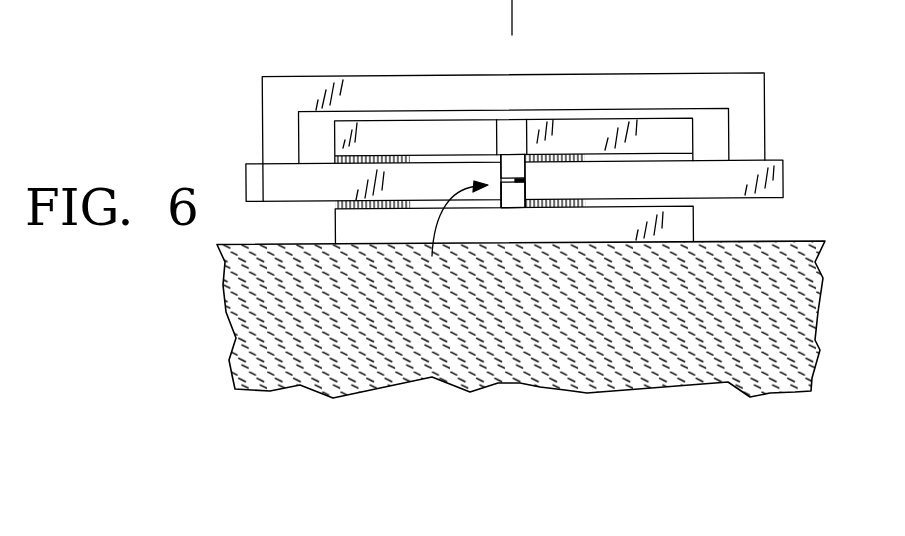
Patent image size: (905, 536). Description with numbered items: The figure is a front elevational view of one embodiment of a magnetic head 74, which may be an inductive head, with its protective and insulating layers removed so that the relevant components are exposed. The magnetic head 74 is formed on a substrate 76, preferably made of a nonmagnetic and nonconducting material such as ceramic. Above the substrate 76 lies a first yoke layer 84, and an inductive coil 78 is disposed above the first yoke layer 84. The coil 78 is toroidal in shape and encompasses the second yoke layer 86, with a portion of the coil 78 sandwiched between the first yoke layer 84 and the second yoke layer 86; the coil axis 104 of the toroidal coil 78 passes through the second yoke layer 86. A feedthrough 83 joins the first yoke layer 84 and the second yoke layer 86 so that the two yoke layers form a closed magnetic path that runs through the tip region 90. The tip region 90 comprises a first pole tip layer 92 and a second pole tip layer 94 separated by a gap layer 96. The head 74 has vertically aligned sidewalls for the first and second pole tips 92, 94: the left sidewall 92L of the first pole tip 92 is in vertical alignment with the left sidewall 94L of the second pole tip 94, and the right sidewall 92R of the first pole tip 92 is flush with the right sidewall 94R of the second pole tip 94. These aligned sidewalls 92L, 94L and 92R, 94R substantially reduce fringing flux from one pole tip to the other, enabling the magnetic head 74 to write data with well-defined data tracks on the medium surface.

The magnetic head 74 is at (194, 58).
The substrate 76 is at (227, 285).
The inductive coil 78 is at (756, 74).
The feedthrough 83 is at (684, 200).
The first yoke layer 84 is at (362, 227).
The second yoke layer 86 is at (298, 128).
The tip region 90 is at (454, 233).
The first pole tip layer 92 is at (511, 197).
The left sidewall of the first pole tip 92L is at (502, 198).
The right sidewall of the first pole tip 92R is at (526, 193).
The second pole tip layer 94 is at (513, 167).
The left sidewall of the second pole tip 94L is at (501, 174).
The right sidewall of the second pole tip 94R is at (525, 171).
The gap layer 96 is at (528, 186).
The coil axis 104 is at (512, 12).